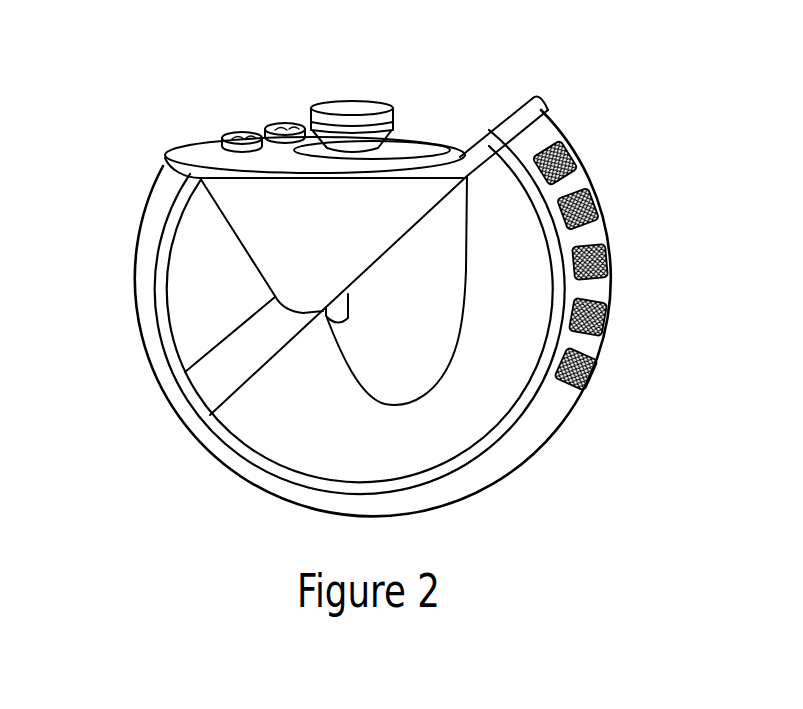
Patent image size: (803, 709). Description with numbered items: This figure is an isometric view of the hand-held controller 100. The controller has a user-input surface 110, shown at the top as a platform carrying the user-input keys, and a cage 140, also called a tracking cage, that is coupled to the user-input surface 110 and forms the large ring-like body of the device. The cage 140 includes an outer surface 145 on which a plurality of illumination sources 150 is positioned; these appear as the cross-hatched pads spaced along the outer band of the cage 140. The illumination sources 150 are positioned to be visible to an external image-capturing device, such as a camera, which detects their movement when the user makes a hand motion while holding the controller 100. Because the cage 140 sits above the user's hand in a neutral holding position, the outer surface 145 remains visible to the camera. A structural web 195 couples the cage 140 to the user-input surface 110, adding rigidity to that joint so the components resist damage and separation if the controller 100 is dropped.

The hand-held controller 100 is at (143, 52).
The user-input surface 110 is at (212, 153).
The cage 140 is at (157, 213).
The outer surface 145 is at (578, 178).
The illumination sources 150 is at (607, 260).
The structural web 195 is at (197, 308).